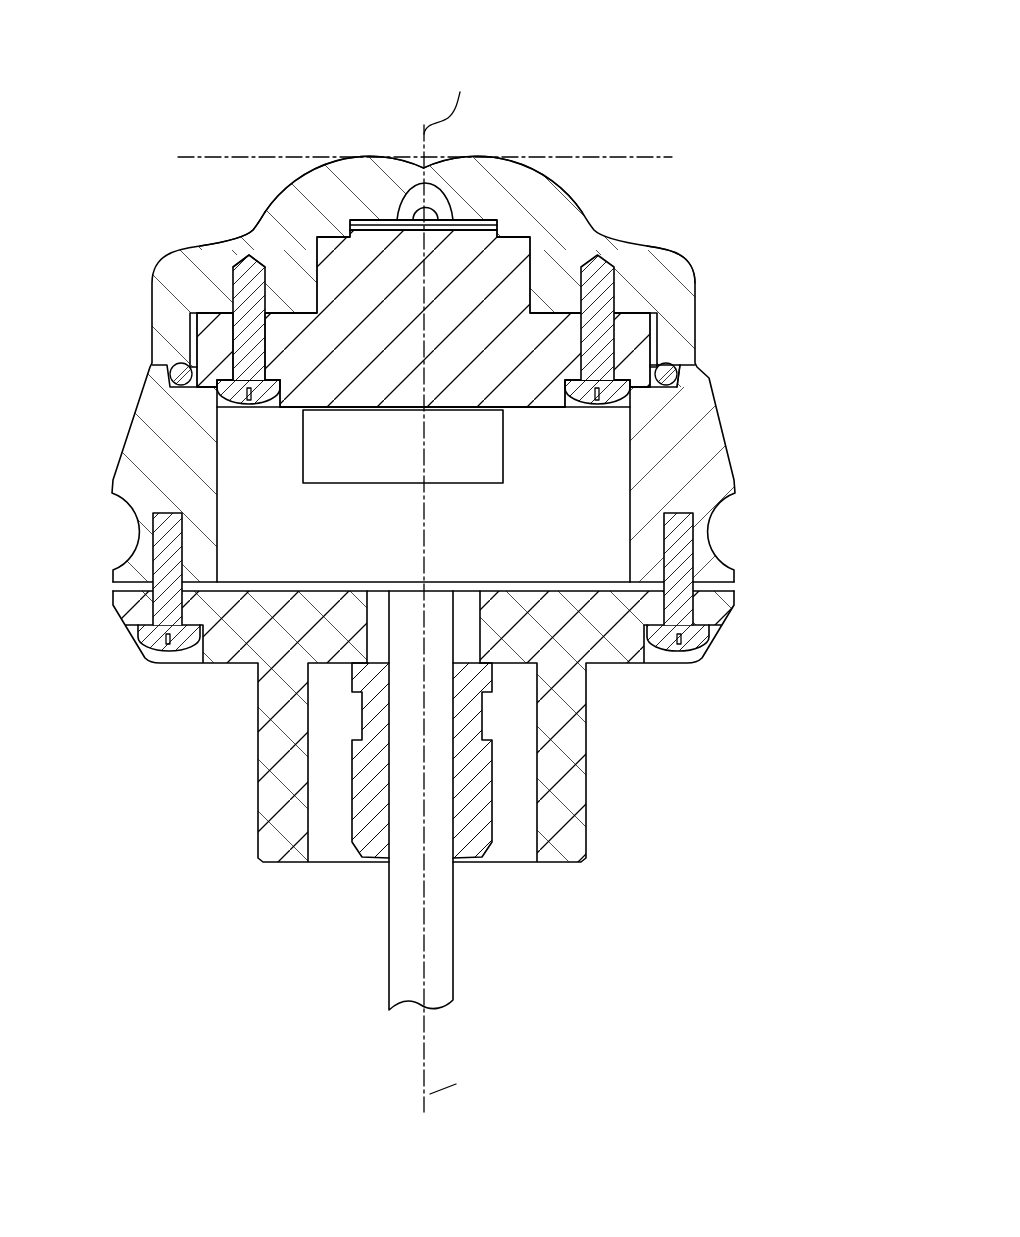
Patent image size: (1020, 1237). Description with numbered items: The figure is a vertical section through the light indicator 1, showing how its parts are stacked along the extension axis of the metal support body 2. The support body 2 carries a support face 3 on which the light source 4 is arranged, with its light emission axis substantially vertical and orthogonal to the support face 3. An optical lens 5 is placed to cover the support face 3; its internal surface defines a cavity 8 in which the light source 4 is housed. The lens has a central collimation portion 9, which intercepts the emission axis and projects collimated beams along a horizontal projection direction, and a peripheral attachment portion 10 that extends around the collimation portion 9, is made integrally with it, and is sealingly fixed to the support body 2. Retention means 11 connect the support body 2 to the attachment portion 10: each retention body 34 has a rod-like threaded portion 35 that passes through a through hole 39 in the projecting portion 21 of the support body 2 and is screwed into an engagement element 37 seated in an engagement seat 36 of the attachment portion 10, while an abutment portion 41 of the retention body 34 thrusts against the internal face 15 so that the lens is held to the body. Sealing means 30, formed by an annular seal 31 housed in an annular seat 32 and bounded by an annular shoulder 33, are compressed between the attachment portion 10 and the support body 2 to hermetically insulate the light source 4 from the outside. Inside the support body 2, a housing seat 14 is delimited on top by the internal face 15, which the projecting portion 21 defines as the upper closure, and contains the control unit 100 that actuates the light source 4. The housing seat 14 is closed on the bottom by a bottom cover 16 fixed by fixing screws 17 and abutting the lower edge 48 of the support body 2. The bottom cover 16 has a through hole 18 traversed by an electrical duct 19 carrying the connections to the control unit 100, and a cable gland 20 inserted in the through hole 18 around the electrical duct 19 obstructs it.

The light indicator 1 is at (140, 60).
The support body 2 is at (128, 472).
The support face 3 is at (446, 208).
The light source 4 is at (446, 207).
The optical lens 5 is at (258, 216).
The cavity 8 is at (408, 188).
The collimation portion 9 is at (572, 205).
The attachment portion 10 is at (650, 270).
The retention means 11 is at (604, 356).
The housing seat 14 is at (486, 552).
The internal face 15 is at (547, 412).
The bottom cover 16 is at (220, 645).
The fixing screws 17 is at (150, 636).
The through hole 18 is at (378, 637).
The electrical duct 19 is at (402, 973).
The cable gland 20 is at (365, 840).
The projecting portion 21 is at (357, 262).
The sealing means 30 is at (682, 362).
The annular seal 31 is at (670, 383).
The annular seat 32 is at (690, 395).
The annular shoulder 33 is at (690, 377).
The retention body 34 is at (243, 327).
The threaded portion 35 is at (243, 347).
The engagement seat 36 is at (240, 259).
The engagement element 37 is at (234, 285).
The through hole 39 is at (271, 414).
The abutment portion 41 is at (227, 390).
The lower edge 48 is at (733, 598).
The control unit 100 is at (345, 480).